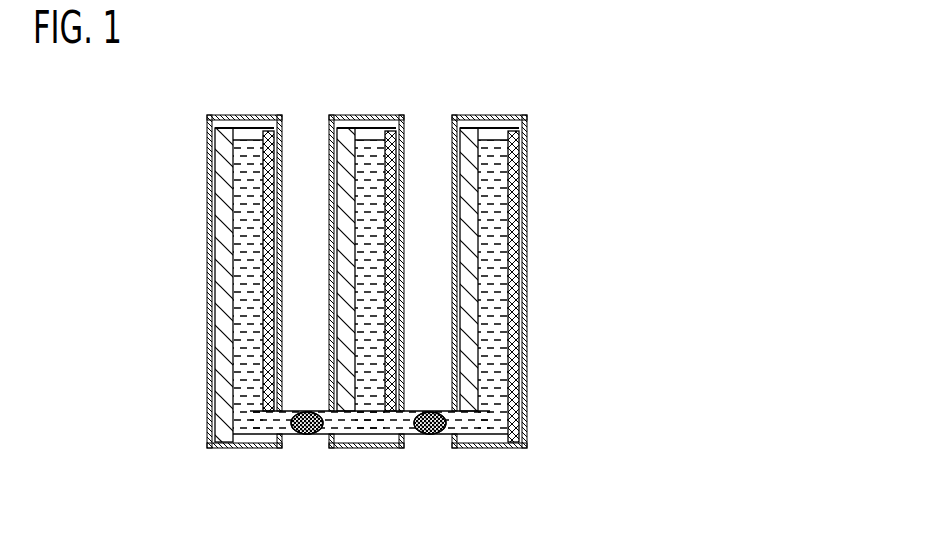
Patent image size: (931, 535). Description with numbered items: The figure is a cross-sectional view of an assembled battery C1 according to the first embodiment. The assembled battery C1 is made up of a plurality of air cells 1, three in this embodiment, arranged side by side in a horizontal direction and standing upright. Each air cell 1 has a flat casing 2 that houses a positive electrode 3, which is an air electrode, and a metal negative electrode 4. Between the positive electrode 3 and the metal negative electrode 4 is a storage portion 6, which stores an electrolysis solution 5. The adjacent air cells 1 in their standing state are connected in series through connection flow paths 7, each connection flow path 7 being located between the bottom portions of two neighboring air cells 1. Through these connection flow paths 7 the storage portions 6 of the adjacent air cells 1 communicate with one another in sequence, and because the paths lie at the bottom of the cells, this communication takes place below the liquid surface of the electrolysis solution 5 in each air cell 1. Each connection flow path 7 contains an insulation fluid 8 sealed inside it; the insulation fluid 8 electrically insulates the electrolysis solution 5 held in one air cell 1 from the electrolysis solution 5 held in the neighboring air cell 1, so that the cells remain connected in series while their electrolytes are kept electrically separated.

The assembled battery C1 is at (554, 98).
The air cell 1 is at (255, 108).
The flat casing 2 is at (209, 163).
The positive electrode 3 is at (267, 223).
The metal negative electrode 4 is at (218, 280).
The electrolysis solution 5 is at (243, 353).
The storage portion 6 is at (247, 129).
The connection flow path 7 is at (291, 437).
The insulation fluid 8 is at (307, 434).